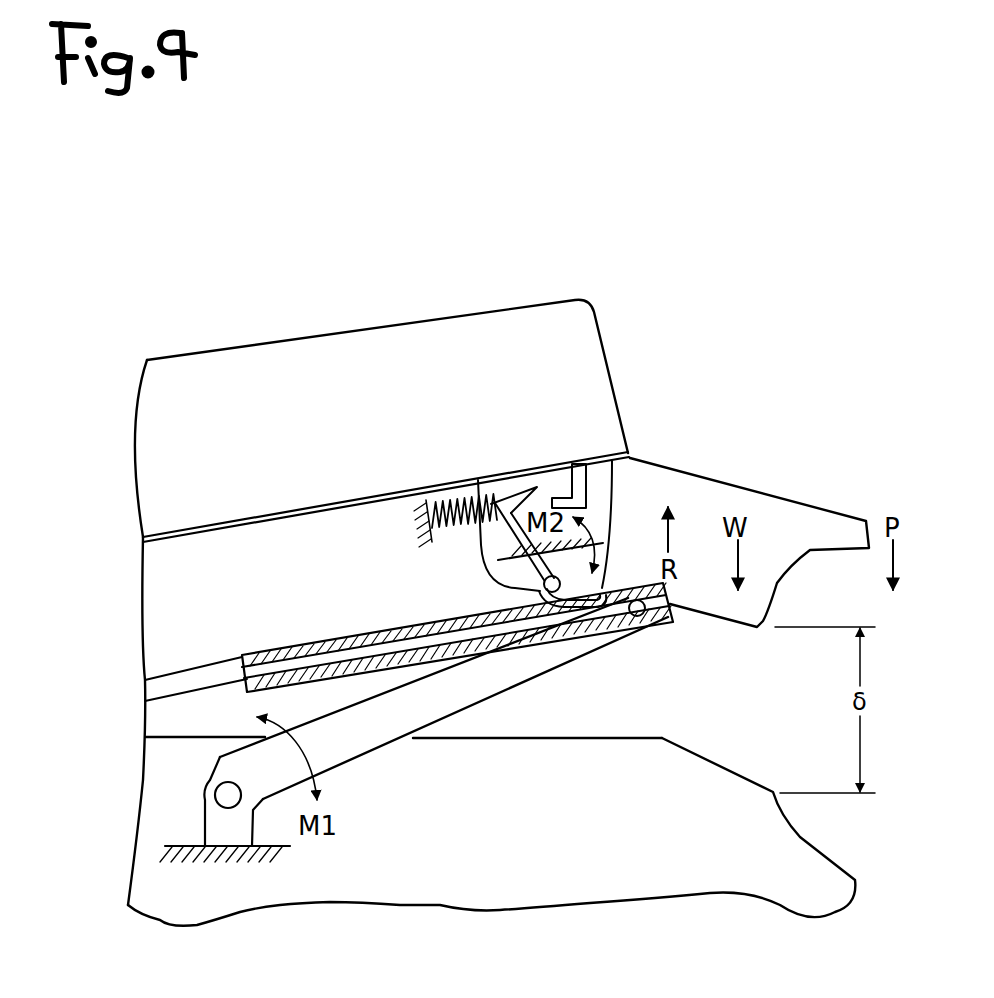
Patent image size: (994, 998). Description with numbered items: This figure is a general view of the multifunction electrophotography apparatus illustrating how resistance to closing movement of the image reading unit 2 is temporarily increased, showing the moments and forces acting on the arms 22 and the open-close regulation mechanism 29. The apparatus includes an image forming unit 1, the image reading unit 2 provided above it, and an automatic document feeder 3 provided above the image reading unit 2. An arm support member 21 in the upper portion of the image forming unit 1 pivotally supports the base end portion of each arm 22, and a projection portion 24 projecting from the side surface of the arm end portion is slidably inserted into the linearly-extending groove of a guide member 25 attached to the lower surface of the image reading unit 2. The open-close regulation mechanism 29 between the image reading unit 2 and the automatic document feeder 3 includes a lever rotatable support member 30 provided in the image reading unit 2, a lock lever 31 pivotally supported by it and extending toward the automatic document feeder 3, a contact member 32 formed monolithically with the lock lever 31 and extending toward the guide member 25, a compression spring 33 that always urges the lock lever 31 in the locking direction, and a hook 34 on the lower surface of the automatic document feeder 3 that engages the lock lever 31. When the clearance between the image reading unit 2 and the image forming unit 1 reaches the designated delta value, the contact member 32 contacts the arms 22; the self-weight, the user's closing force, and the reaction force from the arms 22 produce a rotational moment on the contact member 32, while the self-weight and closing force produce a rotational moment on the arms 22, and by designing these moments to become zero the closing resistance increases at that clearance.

The image forming unit 1 is at (773, 839).
The image reading unit 2 is at (162, 606).
The automatic document feeder 3 is at (162, 444).
The arm support member 21 is at (228, 795).
The arm 22 is at (383, 740).
The projection portion 24 is at (646, 614).
The guide member 25 is at (145, 701).
The open-close regulation mechanism 29 is at (620, 223).
The lever rotatable support member 30 is at (481, 496).
The lock lever 31 is at (499, 495).
The contact member 32 is at (627, 452).
The compression spring 33 is at (442, 500).
The hook 34 is at (562, 464).